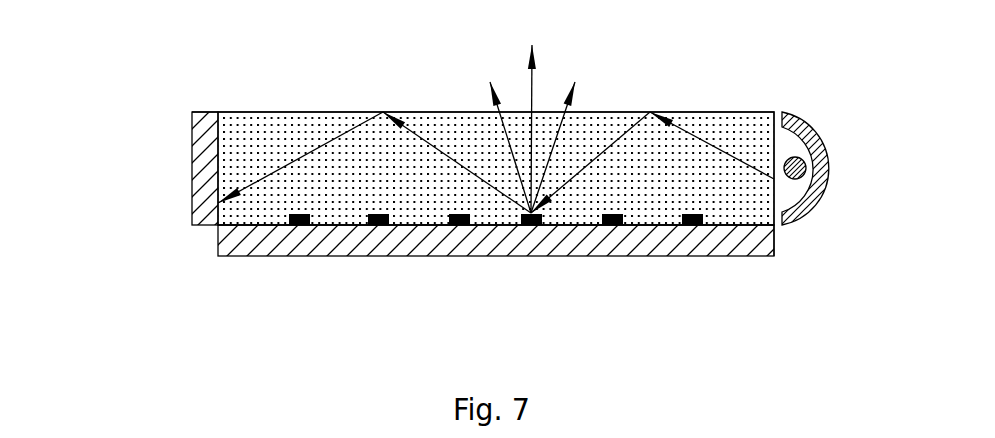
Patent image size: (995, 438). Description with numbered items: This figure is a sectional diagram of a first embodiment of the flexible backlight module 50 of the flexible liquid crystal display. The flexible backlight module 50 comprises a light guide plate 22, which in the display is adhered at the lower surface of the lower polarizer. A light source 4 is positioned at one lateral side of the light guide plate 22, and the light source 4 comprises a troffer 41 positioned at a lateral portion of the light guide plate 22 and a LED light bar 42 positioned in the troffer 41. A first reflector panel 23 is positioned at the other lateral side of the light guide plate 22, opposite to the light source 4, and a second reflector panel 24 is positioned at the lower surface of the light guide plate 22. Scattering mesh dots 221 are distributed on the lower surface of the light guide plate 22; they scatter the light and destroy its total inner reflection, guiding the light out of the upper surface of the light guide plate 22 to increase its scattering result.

The flexible backlight module 50 is at (75, 45).
The first reflector panel 23 is at (200, 178).
The second reflector panel 24 is at (471, 242).
The light guide plate 22 is at (721, 200).
The scattering mesh dots 221 is at (293, 226).
The light source 4 is at (874, 112).
The troffer 41 is at (805, 124).
The LED light bar 42 is at (805, 165).